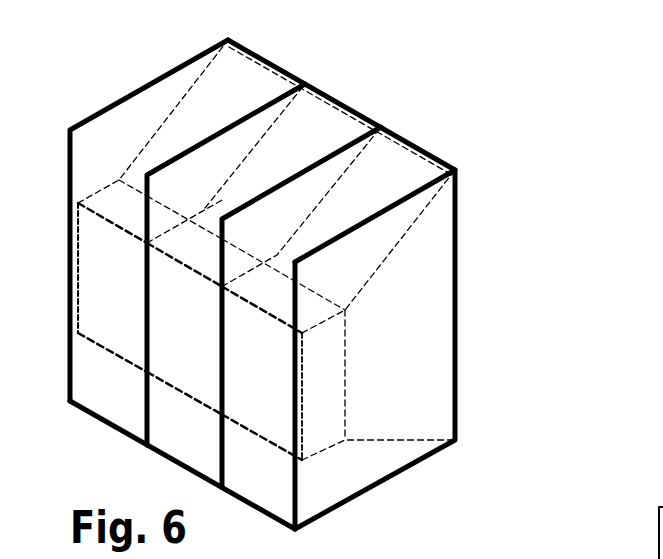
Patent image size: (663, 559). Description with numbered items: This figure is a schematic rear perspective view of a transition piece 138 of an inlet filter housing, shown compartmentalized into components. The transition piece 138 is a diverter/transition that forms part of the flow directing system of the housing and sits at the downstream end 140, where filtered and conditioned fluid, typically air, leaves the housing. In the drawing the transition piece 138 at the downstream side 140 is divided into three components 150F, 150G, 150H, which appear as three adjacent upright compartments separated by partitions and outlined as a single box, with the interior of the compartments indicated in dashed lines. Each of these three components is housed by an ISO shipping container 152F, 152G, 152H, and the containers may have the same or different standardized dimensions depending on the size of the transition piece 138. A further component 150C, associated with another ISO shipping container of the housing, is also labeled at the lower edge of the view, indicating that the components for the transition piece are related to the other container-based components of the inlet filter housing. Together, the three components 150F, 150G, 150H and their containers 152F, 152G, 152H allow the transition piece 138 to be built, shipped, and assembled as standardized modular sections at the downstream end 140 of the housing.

The transition piece 138 is at (316, 269).
The downstream end 140 is at (392, 342).
The component 150C is at (498, 546).
The component 150F is at (402, 175).
The component 150G is at (315, 130).
The component 150H is at (247, 90).
The ISO shipping container 152F is at (457, 232).
The ISO shipping container 152G is at (360, 112).
The ISO shipping container 152H is at (100, 113).